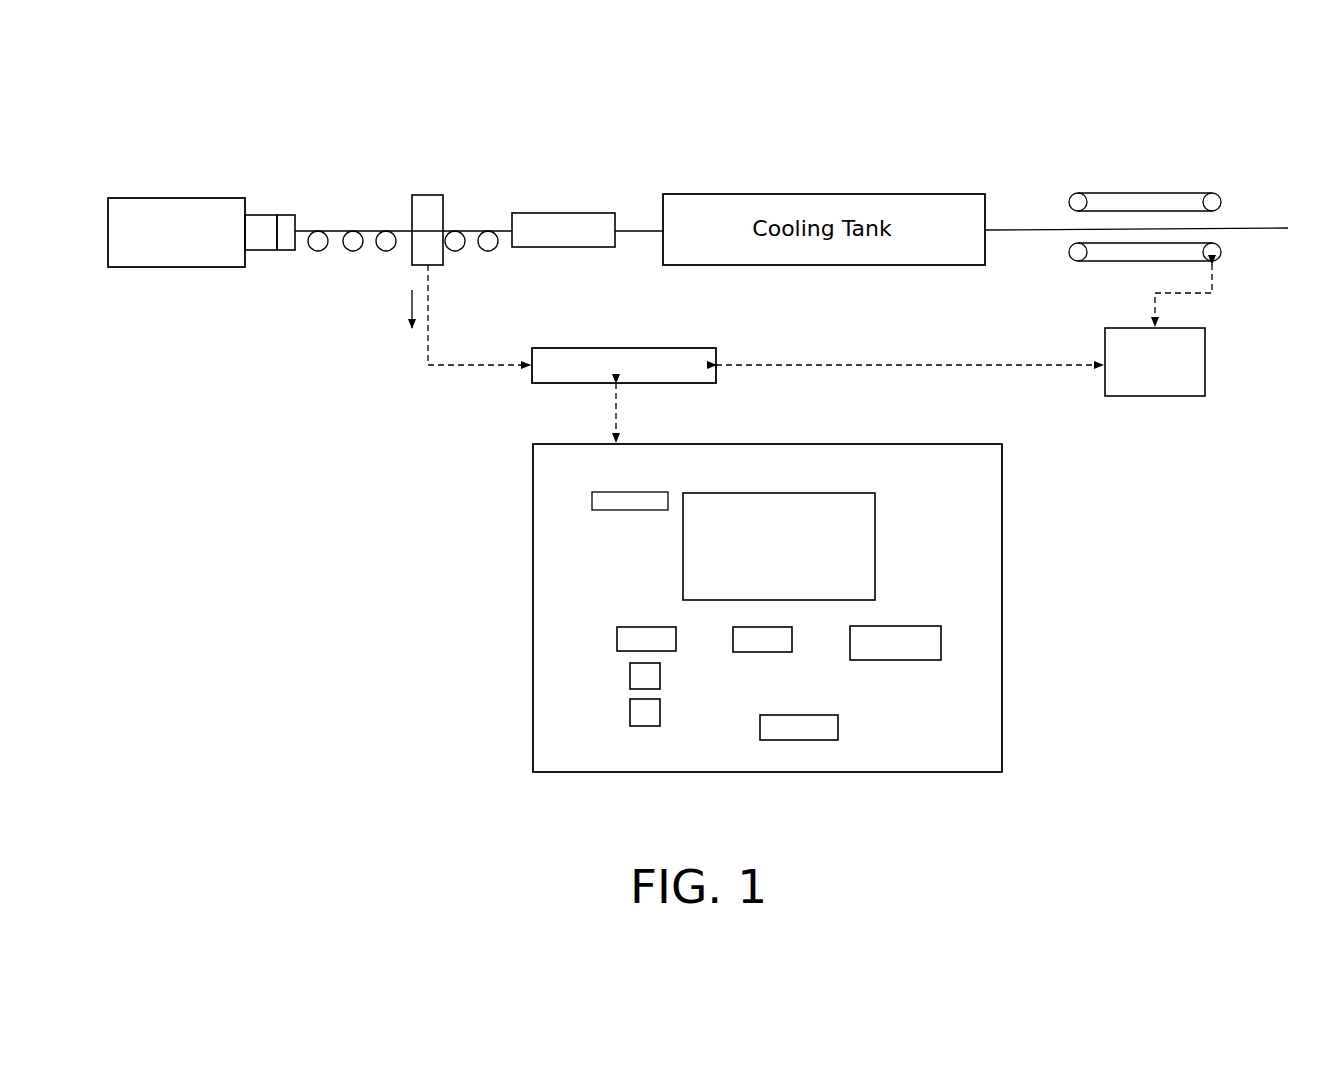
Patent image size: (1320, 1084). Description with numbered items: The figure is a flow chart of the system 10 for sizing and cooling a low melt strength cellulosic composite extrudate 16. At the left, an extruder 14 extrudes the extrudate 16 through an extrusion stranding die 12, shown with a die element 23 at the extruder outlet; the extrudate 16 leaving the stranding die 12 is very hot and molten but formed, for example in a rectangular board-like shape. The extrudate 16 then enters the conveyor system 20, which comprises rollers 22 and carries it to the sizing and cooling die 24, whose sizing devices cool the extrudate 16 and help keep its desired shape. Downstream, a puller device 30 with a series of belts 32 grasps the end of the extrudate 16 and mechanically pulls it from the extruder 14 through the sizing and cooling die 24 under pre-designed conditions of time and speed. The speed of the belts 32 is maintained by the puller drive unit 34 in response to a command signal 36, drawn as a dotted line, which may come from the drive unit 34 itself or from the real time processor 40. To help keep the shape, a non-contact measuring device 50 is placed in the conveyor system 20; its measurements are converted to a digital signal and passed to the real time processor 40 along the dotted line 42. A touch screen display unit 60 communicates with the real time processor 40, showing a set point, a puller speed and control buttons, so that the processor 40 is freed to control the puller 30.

The system 10 is at (365, 493).
The extrusion stranding die 12 is at (273, 287).
The extruder 14 is at (176, 232).
The cellulosic composite extrudate 16 is at (335, 228).
The conveyor system 20 is at (351, 270).
The rollers 22 is at (318, 252).
The extrusion die 23 is at (288, 205).
The sizing and cooling die 24 is at (567, 197).
The puller device 30 is at (1072, 178).
The belts 32 is at (1145, 178).
The puller drive unit 34 is at (1158, 330).
The command signal 36 is at (882, 362).
The real time processor 40 is at (624, 395).
The dotted line (digital signal to processor) 42 is at (428, 318).
The non-contact measuring device 50 is at (428, 180).
The touch screen display unit 60 is at (533, 628).